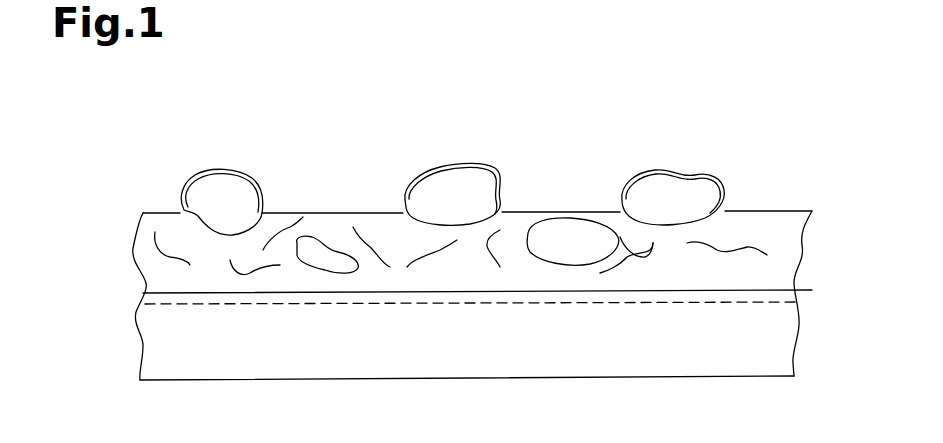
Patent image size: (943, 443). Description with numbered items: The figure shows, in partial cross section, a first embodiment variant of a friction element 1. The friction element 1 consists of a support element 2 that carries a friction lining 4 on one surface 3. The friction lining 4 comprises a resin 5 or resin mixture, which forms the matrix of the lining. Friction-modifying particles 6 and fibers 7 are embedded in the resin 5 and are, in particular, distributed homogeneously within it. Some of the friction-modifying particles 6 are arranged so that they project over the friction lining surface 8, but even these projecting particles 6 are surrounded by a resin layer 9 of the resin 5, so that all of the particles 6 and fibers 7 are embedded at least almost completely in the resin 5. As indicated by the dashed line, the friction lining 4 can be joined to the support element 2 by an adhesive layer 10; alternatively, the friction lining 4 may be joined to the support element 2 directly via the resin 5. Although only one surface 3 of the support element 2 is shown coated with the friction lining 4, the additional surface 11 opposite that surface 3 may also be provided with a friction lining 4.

The friction element 1 is at (731, 100).
The support element 2 is at (753, 332).
The surface 3 is at (312, 293).
The friction lining 4 is at (535, 205).
The resin 5 is at (778, 233).
The friction-modifying particles 6 is at (657, 197).
The fibers 7 is at (371, 236).
The friction lining surface 8 is at (293, 212).
The resin layer 9 is at (222, 168).
The adhesive layer 10 is at (128, 297).
The additional surface 11 is at (460, 378).